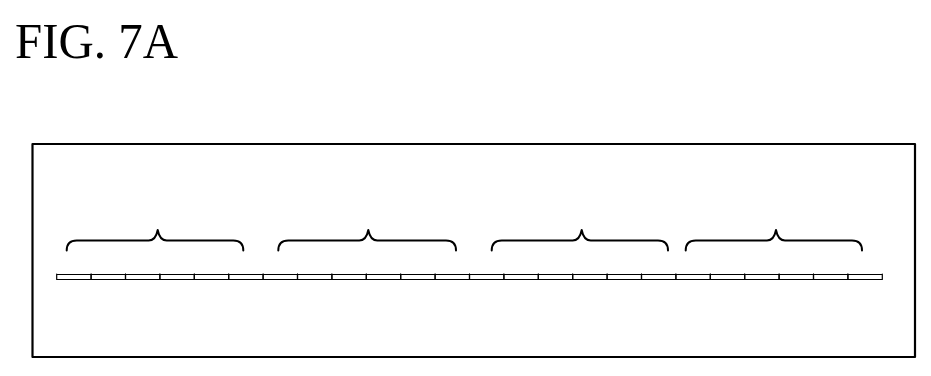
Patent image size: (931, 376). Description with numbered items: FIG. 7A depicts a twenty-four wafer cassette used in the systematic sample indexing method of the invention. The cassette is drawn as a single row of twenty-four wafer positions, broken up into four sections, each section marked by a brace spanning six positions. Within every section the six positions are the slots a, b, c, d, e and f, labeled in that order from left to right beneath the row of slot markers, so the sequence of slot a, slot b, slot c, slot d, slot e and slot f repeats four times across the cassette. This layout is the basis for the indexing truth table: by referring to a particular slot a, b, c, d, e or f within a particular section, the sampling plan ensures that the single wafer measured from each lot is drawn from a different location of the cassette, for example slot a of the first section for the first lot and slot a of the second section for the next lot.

The slot a is at (384, 292).
The slot b is at (418, 292).
The slot c is at (453, 292).
The slot d is at (487, 292).
The slot e is at (521, 292).
The slot f is at (556, 292).